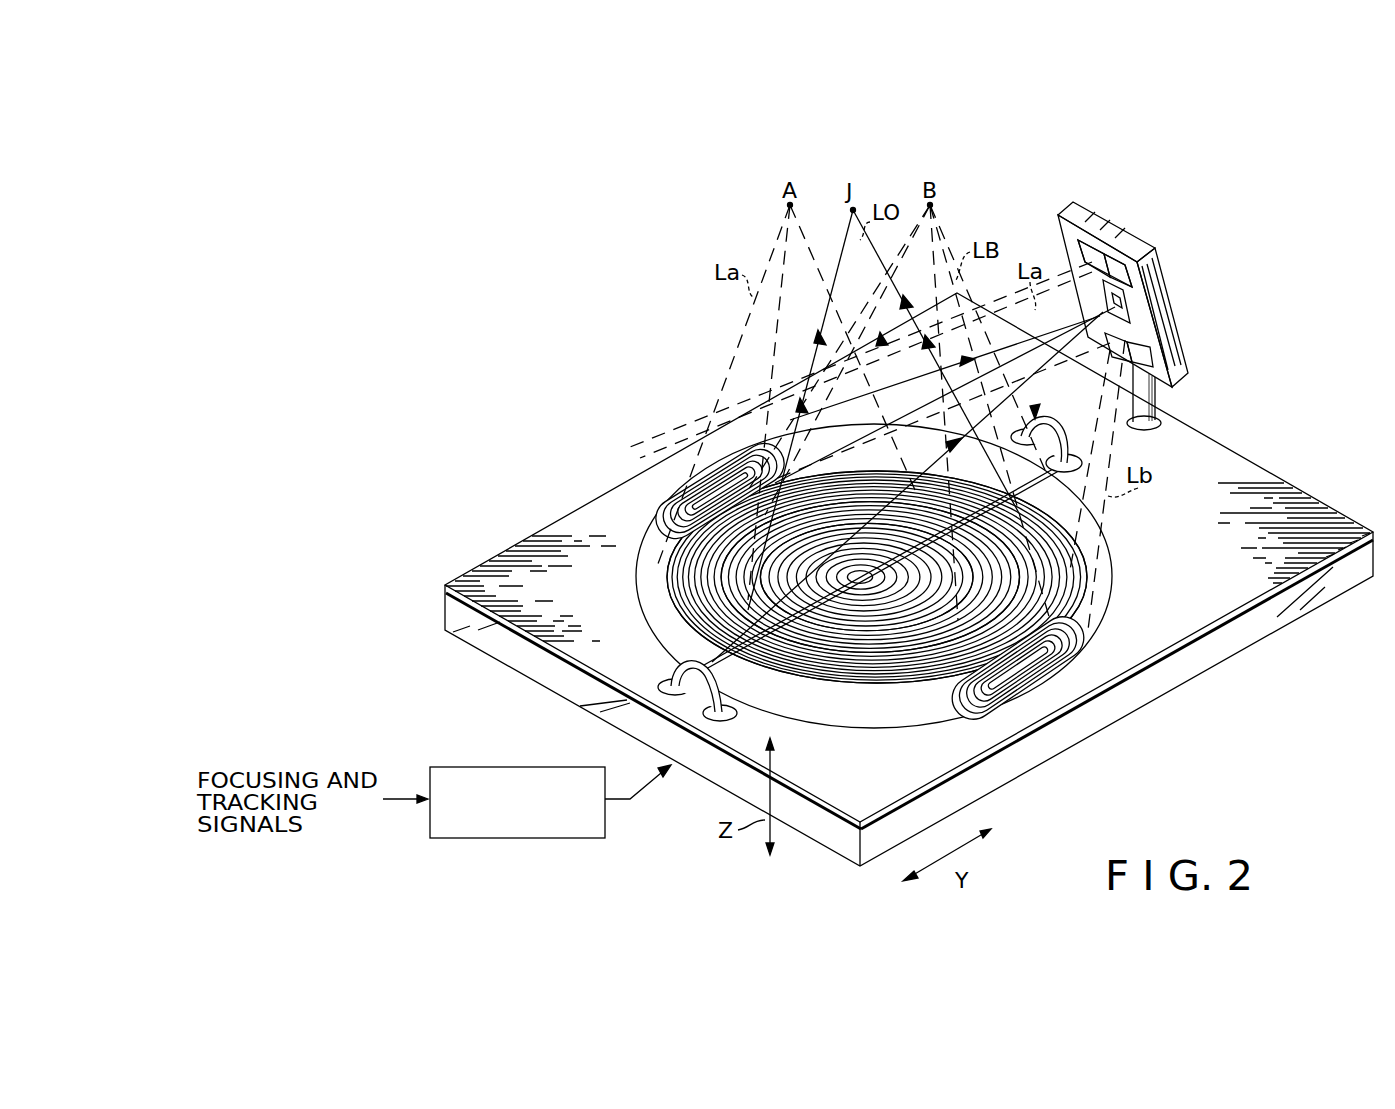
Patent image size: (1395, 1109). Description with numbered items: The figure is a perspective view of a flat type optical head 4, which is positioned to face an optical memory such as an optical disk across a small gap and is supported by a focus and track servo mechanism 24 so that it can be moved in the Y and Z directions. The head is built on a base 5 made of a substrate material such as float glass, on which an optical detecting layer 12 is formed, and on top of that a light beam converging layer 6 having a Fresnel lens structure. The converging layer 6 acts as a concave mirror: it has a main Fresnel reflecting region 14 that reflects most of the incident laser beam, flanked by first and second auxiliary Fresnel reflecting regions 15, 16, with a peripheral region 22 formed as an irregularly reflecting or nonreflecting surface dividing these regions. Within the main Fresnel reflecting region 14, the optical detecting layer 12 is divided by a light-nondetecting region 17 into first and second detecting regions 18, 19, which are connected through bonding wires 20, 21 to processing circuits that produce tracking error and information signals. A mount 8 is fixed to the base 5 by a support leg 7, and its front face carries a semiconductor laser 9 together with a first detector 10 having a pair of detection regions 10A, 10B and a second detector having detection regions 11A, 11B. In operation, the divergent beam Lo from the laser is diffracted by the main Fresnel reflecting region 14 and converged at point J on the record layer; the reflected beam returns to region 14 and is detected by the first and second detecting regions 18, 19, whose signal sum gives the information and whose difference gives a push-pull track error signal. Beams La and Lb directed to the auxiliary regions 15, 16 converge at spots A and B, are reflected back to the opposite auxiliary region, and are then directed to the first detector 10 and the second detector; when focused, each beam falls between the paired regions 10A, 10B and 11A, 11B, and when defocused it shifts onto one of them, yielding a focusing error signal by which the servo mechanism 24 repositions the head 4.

The flat type optical head 4 is at (1272, 460).
The base 5 is at (1273, 628).
The light beam converging layer 6 is at (1373, 532).
The support leg 7 is at (1150, 402).
The mount 8 is at (1176, 276).
The semiconductor laser 9 is at (1135, 308).
The first detector 10 is at (1113, 262).
The detection region 10A is at (1092, 250).
The detection region 10B is at (1140, 272).
The detection region 11A is at (1100, 336).
The detection region 11B is at (1158, 356).
The optical detecting layer 12 is at (905, 650).
The main Fresnel reflecting region 14 is at (857, 482).
The first auxiliary Fresnel reflecting region 15 is at (690, 462).
The second auxiliary Fresnel reflecting region 16 is at (1080, 650).
The light-nondetecting region 17 is at (780, 645).
The first detecting region 18 is at (1043, 583).
The second detecting region 19 is at (682, 557).
The bonding wire 20 is at (1045, 426).
The bonding wire 21 is at (680, 680).
The peripheral region 22 is at (1095, 530).
The focus and track servo mechanism 24 is at (505, 765).